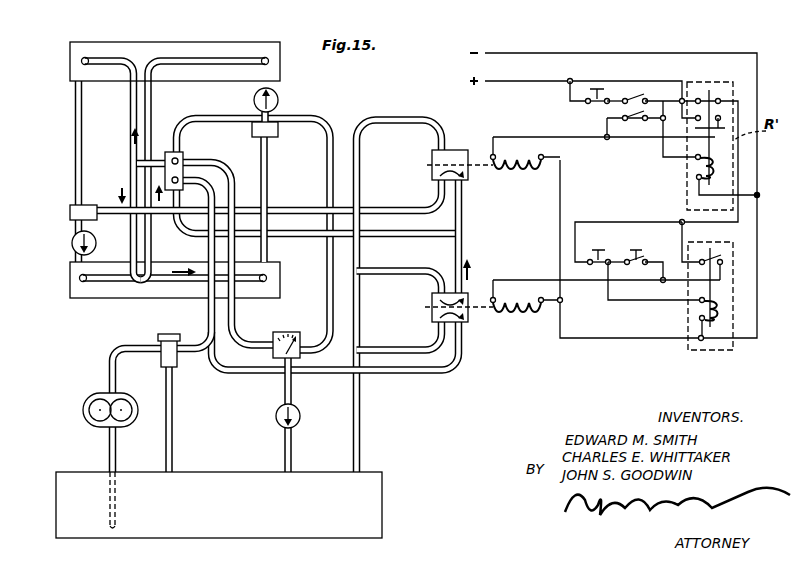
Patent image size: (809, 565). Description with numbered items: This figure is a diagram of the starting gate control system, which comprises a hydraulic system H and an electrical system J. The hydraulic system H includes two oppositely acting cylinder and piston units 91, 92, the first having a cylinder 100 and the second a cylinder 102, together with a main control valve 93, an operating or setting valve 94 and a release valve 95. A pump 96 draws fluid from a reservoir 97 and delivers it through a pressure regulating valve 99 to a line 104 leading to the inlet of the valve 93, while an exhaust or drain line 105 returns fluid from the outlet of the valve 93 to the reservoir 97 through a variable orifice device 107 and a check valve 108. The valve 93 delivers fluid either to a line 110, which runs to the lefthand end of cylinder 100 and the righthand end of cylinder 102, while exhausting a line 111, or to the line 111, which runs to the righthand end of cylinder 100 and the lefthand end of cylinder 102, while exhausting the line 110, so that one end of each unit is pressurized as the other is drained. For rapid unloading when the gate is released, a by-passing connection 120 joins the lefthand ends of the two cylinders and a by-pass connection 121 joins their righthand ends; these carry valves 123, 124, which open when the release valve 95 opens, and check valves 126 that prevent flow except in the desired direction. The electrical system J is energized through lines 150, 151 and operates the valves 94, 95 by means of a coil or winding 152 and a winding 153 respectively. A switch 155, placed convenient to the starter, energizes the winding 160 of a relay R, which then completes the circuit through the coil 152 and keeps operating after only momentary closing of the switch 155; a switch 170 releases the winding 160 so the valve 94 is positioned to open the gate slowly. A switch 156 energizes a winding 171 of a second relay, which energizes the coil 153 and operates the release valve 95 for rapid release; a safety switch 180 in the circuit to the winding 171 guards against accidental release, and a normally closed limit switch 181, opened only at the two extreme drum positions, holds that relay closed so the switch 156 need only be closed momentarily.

The cylinder and piston unit 91 is at (181, 38).
The cylinder 100 is at (231, 43).
The by-passing connection 120 is at (75, 113).
The line 110 is at (130, 131).
The line 111 is at (156, 97).
The check valve 126 is at (254, 100).
The main control valve 93 is at (216, 146).
The valve 124 is at (253, 142).
The by-pass connection 121 is at (267, 181).
The valve 123 is at (75, 205).
The cylinder and piston unit 92 is at (86, 304).
The cylinder 102 is at (175, 298).
The exhaust or drain line 105 is at (236, 307).
The line 104 is at (114, 350).
The pump 96 is at (84, 404).
The pressure regulating valve 99 is at (177, 362).
The reservoir 97 is at (204, 476).
The variable orifice device 107 is at (280, 358).
The check valve 108 is at (300, 417).
The release valve 95 is at (456, 151).
The operating or setting valve 94 is at (466, 322).
The line 150 is at (513, 53).
The line 151 is at (497, 82).
The switch 156 is at (589, 107).
The safety switch 180 is at (634, 97).
The limit switch 181 is at (641, 126).
The switch 155 is at (591, 249).
The switch 170 is at (632, 261).
The winding 171 is at (716, 167).
The winding 160 is at (716, 313).
The winding 153 is at (507, 172).
The coil or winding 152 is at (514, 315).
The hydraulic system H is at (303, 102).
The electrical system J is at (551, 44).
The relay R is at (733, 298).